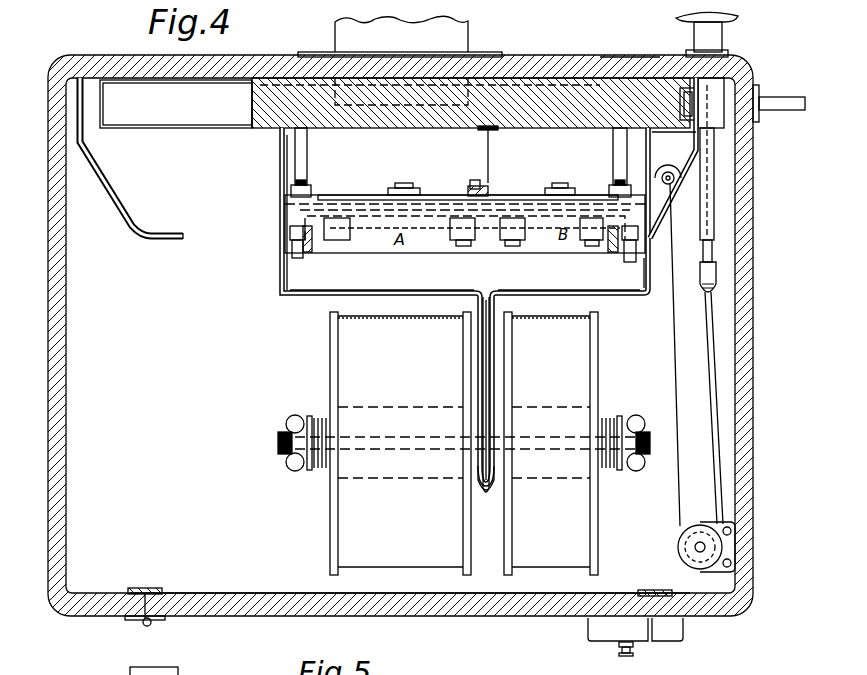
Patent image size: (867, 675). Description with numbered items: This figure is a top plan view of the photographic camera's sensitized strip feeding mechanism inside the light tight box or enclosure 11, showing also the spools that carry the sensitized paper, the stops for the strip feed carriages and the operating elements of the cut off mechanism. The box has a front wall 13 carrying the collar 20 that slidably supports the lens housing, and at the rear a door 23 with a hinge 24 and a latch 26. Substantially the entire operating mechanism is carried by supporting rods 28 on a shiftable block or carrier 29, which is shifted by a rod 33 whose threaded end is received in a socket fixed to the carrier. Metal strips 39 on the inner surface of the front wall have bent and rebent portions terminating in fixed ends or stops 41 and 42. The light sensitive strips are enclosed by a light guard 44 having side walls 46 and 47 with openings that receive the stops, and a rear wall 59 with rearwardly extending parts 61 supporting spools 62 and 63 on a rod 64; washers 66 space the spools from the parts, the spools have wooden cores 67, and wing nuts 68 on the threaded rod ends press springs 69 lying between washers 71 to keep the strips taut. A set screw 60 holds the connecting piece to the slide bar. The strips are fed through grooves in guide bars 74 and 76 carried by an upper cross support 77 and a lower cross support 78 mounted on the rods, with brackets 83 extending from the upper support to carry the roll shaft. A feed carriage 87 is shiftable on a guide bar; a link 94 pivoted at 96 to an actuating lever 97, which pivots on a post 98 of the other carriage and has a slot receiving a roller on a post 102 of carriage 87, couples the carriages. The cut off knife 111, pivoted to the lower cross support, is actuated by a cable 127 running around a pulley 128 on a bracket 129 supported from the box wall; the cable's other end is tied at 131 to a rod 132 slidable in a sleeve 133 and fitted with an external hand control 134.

The light tight box or enclosure 11 is at (50, 472).
The front wall 13 is at (636, 57).
The collar 20 is at (470, 42).
The door 23 is at (418, 612).
The hinge 24 is at (151, 626).
The latch 26 is at (650, 640).
The supporting rods 28 is at (309, 172).
The shiftable block or carrier 29 is at (588, 118).
The rod 33 is at (782, 98).
The metal strips 39 is at (183, 83).
The stop 41 is at (177, 240).
The stop 42 is at (594, 246).
The light guard 44 is at (303, 300).
The side wall 46 is at (280, 188).
The side wall 47 is at (645, 274).
The rear wall 59 is at (378, 292).
The set screw 60 is at (490, 150).
The rearwardly extending parts 61 is at (490, 378).
The spool 62 is at (400, 443).
The spool 63 is at (551, 443).
The rod 64 is at (390, 445).
The washers 66 is at (488, 492).
The cores 67 is at (366, 408).
The wing nuts 68 is at (284, 458).
The springs 69 is at (310, 472).
The washers 71 is at (318, 416).
The guide bar 74 is at (466, 244).
The guide bar 76 is at (508, 244).
The upper cross support 77 is at (623, 233).
The lower cross support 78 is at (432, 252).
The brackets 83 is at (520, 238).
The feed carriage 87 is at (342, 244).
The link 94 is at (490, 190).
The pivot 96 is at (474, 180).
The actuating lever 97 is at (441, 194).
The post 98 is at (560, 186).
The post 102 is at (400, 185).
The cut off knife 111 is at (665, 170).
The cable 127 is at (714, 338).
The pulley 128 is at (678, 551).
The bracket 129 is at (714, 574).
The cable tie 131 is at (716, 270).
The rod 132 is at (715, 212).
The sleeve 133 is at (712, 162).
The external hand control 134 is at (735, 18).